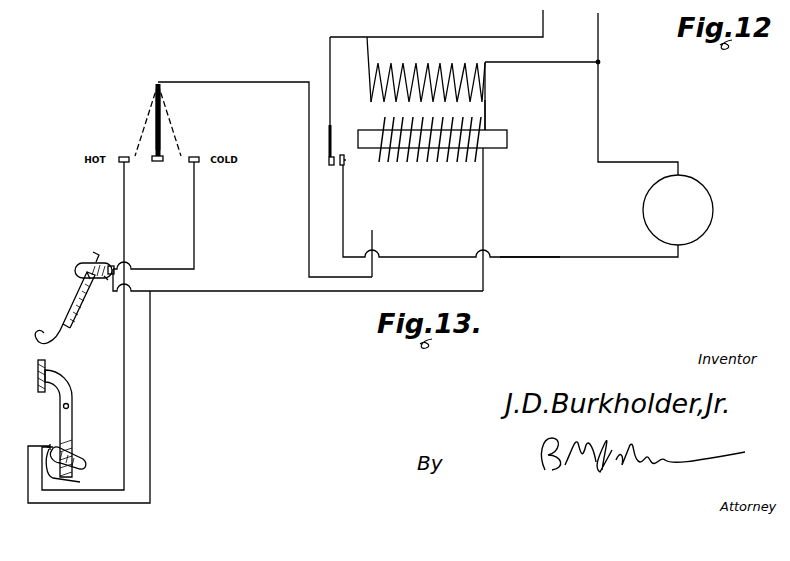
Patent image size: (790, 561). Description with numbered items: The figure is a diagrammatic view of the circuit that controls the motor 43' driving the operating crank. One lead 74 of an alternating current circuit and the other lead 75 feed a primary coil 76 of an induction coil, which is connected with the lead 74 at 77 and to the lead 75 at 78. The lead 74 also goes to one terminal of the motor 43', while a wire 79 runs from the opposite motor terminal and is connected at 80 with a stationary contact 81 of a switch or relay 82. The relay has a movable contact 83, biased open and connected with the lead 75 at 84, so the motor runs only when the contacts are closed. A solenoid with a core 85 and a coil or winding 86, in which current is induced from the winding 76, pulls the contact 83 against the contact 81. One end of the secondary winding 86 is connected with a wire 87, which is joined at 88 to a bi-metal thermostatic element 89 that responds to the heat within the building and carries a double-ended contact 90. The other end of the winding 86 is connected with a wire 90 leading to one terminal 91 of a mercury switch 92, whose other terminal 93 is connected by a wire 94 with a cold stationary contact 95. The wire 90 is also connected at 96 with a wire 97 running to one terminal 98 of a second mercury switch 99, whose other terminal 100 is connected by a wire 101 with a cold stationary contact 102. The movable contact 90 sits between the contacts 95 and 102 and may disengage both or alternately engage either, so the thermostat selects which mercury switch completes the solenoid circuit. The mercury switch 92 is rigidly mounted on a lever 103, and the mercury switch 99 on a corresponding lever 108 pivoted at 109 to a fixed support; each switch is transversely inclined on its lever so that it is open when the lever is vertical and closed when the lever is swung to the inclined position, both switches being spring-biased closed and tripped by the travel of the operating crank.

The motor 43' is at (695, 210).
The lead of alternating current circuit 74 is at (599, 25).
The lead of alternating current circuit 75 is at (501, 36).
The primary coil 76 is at (485, 86).
The connection point 77 is at (599, 62).
The connection point 78 is at (369, 36).
The wire 79 is at (545, 260).
The connection point 80 is at (345, 186).
The stationary contact 81 is at (345, 161).
The switch or relay 82 is at (322, 171).
The movable contact 83 is at (331, 158).
The connection point 84 is at (330, 125).
The core 85 is at (508, 138).
The coil or winding 86 is at (485, 117).
The wire 87 is at (372, 217).
The connection point 88 is at (163, 78).
The bi-metal thermostatic element 89 is at (161, 122).
The double-ended contact 90 is at (176, 150).
The terminal of mercury switch 91 is at (109, 281).
The mercury switch 92 is at (80, 264).
The terminal of mercury switch 93 is at (111, 262).
The wire 94 is at (194, 234).
The cold stationary contact 95 is at (199, 165).
The connection point 96 is at (150, 291).
The wire 97 is at (150, 354).
The terminal of mercury switch 98 is at (50, 446).
The mercury switch 99 is at (85, 457).
The terminal of mercury switch 100 is at (80, 482).
The wire 101 is at (125, 440).
The cold stationary contact 102 is at (121, 164).
The lever 103 is at (72, 307).
The lever 108 is at (67, 426).
The pivot 109 is at (69, 404).